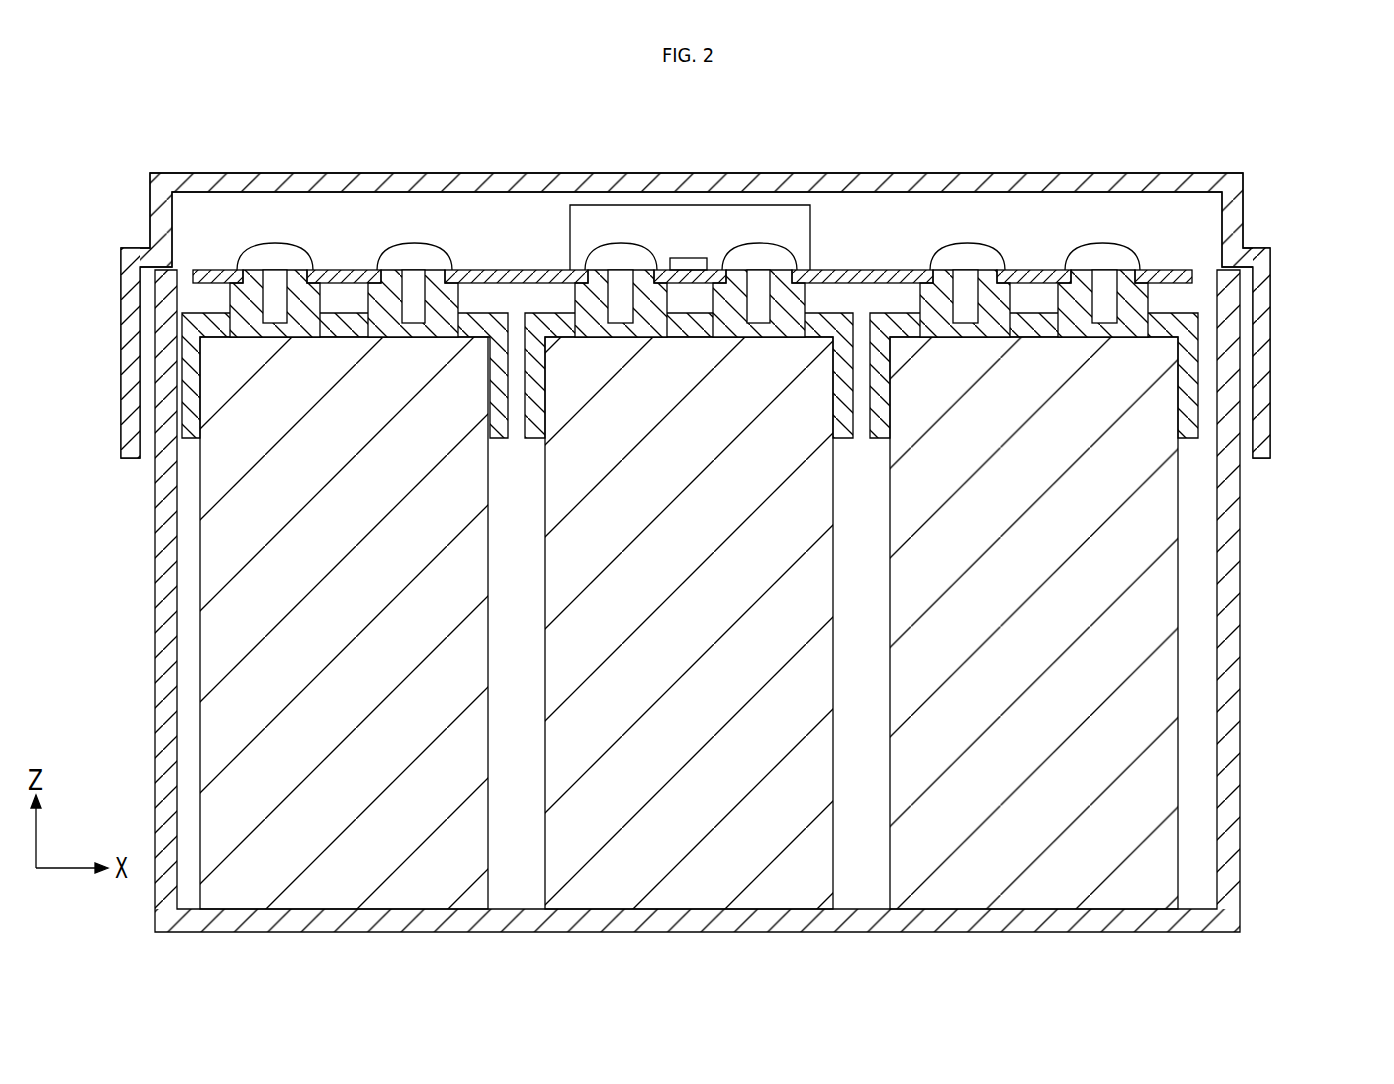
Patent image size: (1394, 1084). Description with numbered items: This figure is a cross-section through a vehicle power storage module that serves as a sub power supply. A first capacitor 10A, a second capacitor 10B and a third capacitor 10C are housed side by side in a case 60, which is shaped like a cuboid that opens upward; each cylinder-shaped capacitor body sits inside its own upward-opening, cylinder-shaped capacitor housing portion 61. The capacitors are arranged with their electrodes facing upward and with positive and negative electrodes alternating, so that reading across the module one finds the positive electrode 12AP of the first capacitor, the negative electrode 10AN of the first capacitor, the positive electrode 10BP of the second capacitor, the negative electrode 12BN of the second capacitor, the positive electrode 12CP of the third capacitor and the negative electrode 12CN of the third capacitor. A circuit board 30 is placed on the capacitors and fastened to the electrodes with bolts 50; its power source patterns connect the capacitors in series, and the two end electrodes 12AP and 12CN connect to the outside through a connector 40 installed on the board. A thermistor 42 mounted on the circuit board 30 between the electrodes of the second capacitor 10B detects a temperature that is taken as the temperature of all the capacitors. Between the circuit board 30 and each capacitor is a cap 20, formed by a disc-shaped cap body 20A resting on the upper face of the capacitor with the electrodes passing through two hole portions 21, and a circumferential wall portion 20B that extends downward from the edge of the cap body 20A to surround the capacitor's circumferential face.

The first capacitor 10A is at (488, 883).
The second capacitor 10B is at (833, 883).
The third capacitor 10C is at (1178, 883).
The positive electrode of first capacitor 12AP is at (322, 296).
The negative electrode terminal of cell A 10AN is at (369, 295).
The positive electrode terminal of cell B 10BP is at (577, 296).
The negative electrode of second capacitor 12BN is at (805, 296).
The positive electrode of third capacitor 12CP is at (1012, 296).
The negative electrode of third capacitor 12CN is at (1148, 296).
The cap 20 is at (777, 354).
The cap body 20A is at (1147, 296).
The circumferential wall portion 20B is at (1198, 392).
The hole portion 21 is at (1137, 307).
The circuit board 30 is at (497, 283).
The connector 40 is at (760, 205).
The thermistor 42 is at (688, 258).
The bolt 50 is at (278, 243).
The case 60 is at (1237, 569).
The capacitor housing portion 61 is at (1178, 690).